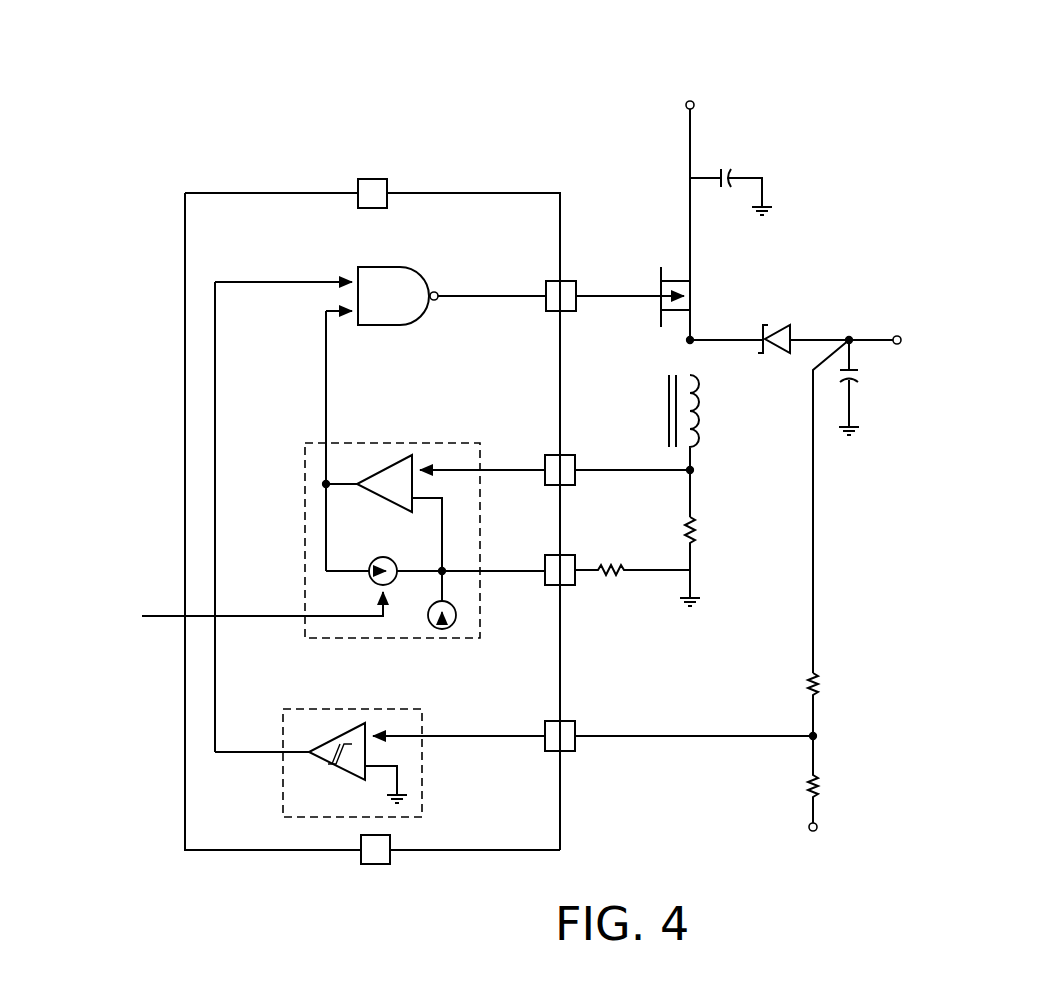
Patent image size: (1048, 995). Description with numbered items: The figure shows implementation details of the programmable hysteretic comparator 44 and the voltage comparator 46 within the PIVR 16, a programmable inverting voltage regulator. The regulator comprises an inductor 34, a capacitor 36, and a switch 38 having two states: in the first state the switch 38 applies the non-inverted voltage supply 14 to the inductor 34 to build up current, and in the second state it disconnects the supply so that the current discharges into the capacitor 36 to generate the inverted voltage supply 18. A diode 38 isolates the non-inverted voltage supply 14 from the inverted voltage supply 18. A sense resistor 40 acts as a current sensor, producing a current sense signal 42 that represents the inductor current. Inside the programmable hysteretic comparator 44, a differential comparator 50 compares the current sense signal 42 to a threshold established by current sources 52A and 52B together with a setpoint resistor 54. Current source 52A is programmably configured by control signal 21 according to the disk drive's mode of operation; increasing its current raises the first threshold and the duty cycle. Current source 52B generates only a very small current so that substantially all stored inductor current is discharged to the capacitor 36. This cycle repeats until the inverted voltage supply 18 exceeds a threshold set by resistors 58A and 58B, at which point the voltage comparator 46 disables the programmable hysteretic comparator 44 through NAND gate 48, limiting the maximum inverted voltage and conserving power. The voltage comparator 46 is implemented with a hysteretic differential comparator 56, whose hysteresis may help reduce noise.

The non-inverted voltage supply 14 is at (692, 131).
The PIVR 16 is at (960, 178).
The inverted voltage supply 18 is at (880, 336).
The control signal 21 is at (168, 612).
The inductor 34 is at (735, 423).
The capacitor 36 is at (878, 382).
The switch 38 is at (646, 262).
The resistor Rs 40 is at (738, 537).
The current sense signal 42 is at (621, 474).
The programmable hysteretic comparator 44 is at (375, 442).
The voltage comparator 46 is at (326, 707).
The NAND gate 48 is at (380, 296).
The differential comparator 50 is at (434, 513).
The current source 52A is at (375, 557).
The current source 52B is at (449, 630).
The resistor Rsp 54 is at (620, 610).
The hysteresis comparator 56 is at (331, 762).
The resistor 58A is at (832, 694).
The resistor 58B is at (832, 793).